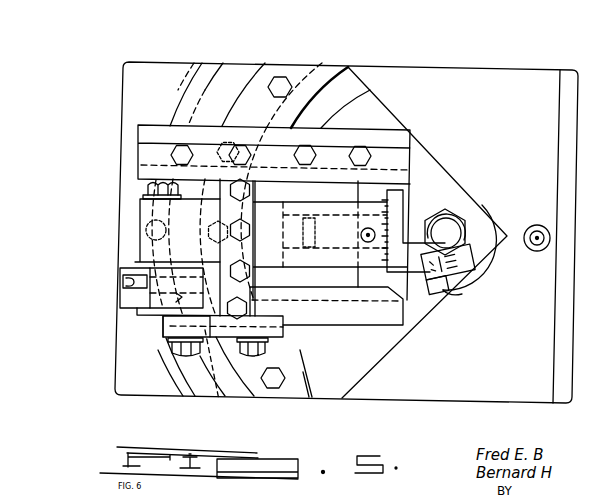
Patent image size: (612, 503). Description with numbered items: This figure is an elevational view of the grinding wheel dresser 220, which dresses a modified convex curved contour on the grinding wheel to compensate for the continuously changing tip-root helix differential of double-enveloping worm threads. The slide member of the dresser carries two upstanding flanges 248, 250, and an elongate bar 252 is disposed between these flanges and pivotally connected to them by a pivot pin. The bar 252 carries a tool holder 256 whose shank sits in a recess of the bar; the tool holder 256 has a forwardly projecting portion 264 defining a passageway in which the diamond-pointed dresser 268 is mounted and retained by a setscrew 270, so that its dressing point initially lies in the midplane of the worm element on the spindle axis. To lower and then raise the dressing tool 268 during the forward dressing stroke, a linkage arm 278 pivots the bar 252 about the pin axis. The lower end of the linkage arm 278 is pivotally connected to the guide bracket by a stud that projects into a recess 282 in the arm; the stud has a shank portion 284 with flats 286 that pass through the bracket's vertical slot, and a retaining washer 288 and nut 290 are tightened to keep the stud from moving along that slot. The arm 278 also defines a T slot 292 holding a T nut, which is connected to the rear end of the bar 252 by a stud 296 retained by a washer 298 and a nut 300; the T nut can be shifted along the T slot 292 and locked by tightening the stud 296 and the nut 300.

The wheel dresser 220 is at (368, 65).
The upstanding flange 248 is at (295, 277).
The upstanding flange 250 is at (345, 185).
The elongate bar 252 is at (177, 213).
The tool holder 256 is at (410, 250).
The forwardly projecting portion 264 is at (462, 294).
The diamond-pointed dresser 268 is at (460, 226).
The setscrew 270 is at (477, 266).
The linkage arm 278 is at (160, 297).
The recess 282 is at (108, 318).
The shank portion 284 is at (185, 360).
The flats 286 is at (219, 400).
The retaining washer 288 is at (172, 333).
The nut 290 is at (240, 350).
The T slot 292 is at (122, 273).
The stud 296 is at (150, 239).
The washer 298 is at (143, 193).
The nut 300 is at (160, 182).